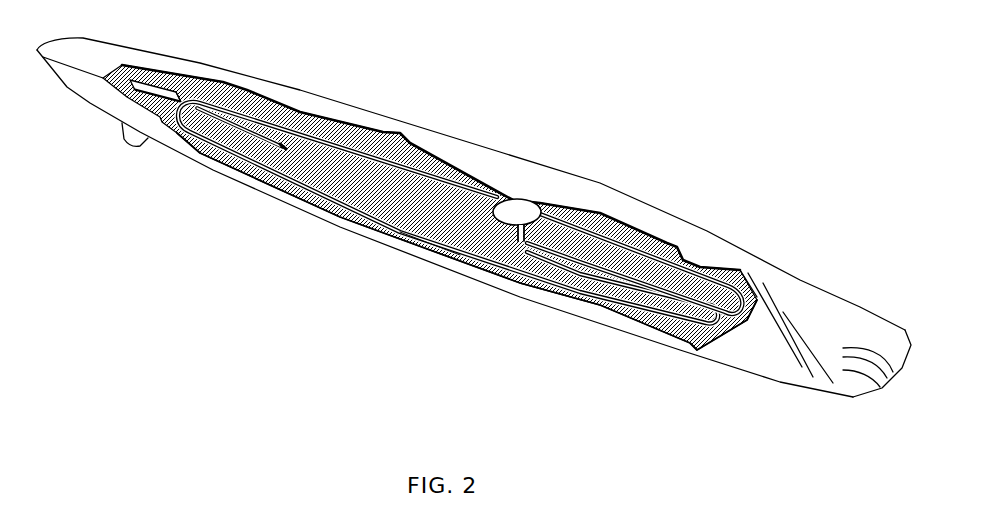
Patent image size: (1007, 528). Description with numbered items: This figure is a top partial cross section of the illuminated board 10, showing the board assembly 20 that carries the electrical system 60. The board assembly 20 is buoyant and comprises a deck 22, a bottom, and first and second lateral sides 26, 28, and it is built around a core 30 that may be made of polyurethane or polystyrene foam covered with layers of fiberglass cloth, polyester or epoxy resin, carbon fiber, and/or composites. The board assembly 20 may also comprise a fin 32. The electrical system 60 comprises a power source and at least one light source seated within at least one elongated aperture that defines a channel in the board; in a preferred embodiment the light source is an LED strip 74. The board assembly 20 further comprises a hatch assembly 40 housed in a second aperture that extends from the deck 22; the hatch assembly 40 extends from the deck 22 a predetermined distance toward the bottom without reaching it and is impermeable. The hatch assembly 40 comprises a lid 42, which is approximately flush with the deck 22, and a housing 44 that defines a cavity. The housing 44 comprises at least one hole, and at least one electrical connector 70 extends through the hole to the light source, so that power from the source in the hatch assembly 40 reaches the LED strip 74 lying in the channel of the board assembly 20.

The illuminated board 10 is at (484, 207).
The board assembly 20 is at (900, 316).
The deck 22 is at (733, 263).
The first lateral side 26 is at (657, 350).
The second lateral side 28 is at (397, 122).
The core 30 is at (283, 100).
The fin 32 is at (143, 140).
The hatch assembly 40 is at (531, 197).
The lid 42 is at (516, 213).
The housing 44 is at (460, 257).
The electrical system 60 is at (247, 108).
The electrical connector 70 is at (578, 228).
The LED strip 74 is at (332, 125).